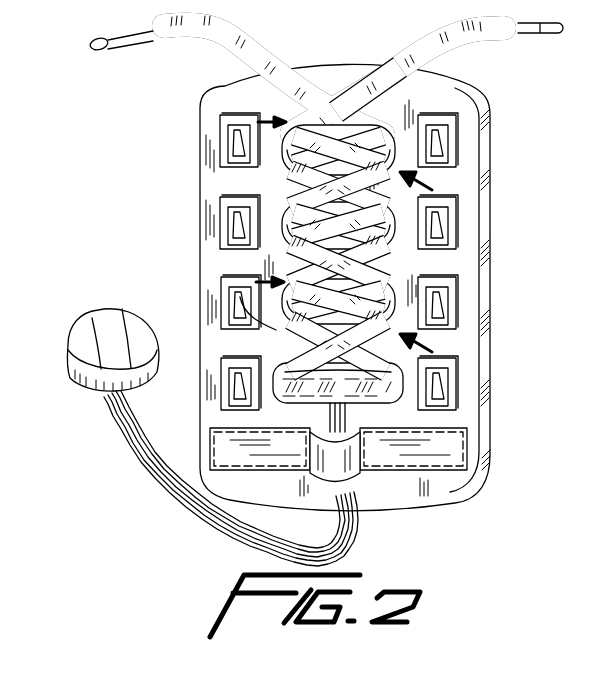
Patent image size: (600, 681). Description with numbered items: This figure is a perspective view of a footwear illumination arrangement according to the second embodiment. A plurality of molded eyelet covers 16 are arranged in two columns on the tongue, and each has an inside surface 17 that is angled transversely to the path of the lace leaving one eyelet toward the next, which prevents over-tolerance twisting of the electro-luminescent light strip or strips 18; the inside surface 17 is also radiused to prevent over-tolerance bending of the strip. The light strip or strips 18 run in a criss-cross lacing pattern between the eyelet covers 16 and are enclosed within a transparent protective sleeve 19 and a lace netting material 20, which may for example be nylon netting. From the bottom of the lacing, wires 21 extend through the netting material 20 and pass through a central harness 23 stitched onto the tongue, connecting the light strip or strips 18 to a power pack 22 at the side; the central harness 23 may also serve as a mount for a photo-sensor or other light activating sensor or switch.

The molded eyelet covers 16 is at (198, 258).
The inside surface 17 is at (232, 294).
The electro-luminescent light strip 18 is at (277, 169).
The transparent protective sleeve 19 is at (272, 93).
The lace netting material 20 is at (266, 27).
The wires 21 is at (344, 422).
The power pack 22 is at (84, 394).
The central harness 23 is at (358, 458).